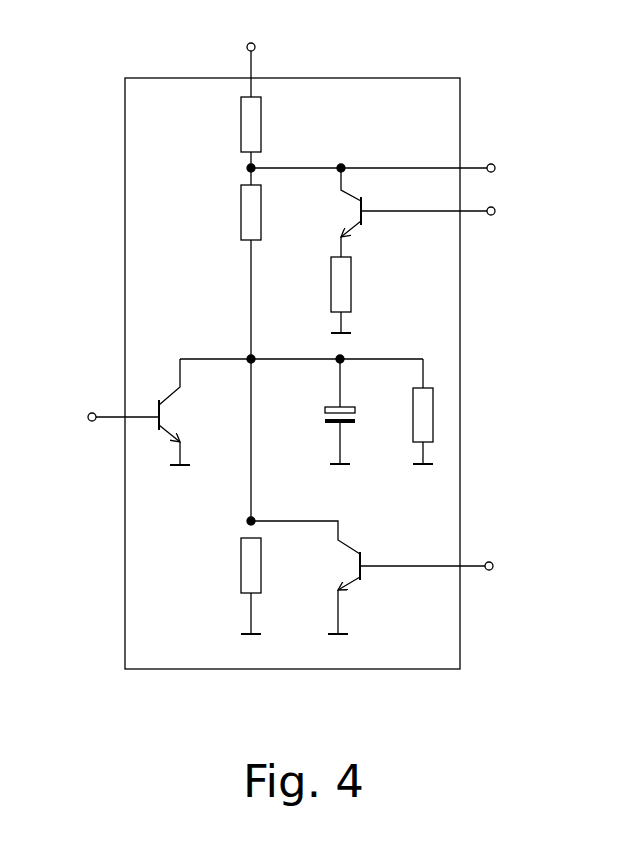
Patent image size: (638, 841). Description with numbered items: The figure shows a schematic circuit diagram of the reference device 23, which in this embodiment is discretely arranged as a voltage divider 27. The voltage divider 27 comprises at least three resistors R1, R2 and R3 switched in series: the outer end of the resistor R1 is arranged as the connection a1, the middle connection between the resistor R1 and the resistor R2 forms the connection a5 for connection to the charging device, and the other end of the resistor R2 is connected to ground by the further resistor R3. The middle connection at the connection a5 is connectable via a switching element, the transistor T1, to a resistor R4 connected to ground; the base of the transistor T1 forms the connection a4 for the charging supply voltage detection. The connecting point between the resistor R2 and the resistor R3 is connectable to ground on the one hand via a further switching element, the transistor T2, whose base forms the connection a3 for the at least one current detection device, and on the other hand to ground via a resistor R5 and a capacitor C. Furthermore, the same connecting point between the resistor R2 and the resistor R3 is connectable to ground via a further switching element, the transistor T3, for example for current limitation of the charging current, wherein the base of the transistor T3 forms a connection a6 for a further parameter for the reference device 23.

The reference device 23 is at (383, 78).
The voltage divider 27 is at (217, 68).
The resistor R1 is at (233, 126).
The resistor R2 is at (232, 214).
The resistor R3 is at (230, 586).
The resistor R4 is at (358, 295).
The resistor R5 is at (405, 426).
The transistor T1 is at (335, 202).
The transistor T2 is at (184, 412).
The transistor T3 is at (305, 577).
The capacitor C is at (325, 434).
The connection a1 is at (253, 52).
The connection a3 is at (104, 417).
The connection a4 is at (446, 211).
The connection a5 is at (509, 168).
The connection a6 is at (445, 565).